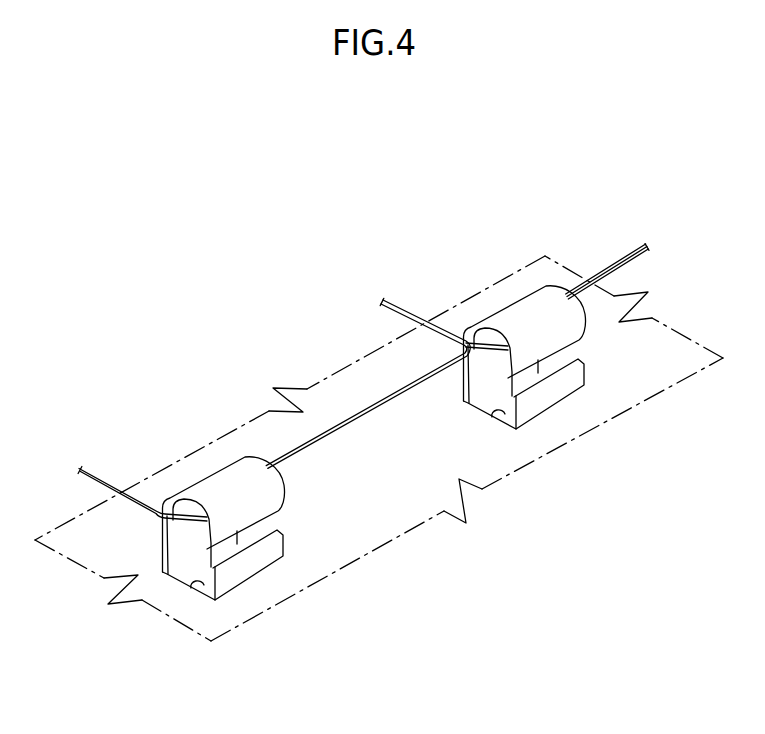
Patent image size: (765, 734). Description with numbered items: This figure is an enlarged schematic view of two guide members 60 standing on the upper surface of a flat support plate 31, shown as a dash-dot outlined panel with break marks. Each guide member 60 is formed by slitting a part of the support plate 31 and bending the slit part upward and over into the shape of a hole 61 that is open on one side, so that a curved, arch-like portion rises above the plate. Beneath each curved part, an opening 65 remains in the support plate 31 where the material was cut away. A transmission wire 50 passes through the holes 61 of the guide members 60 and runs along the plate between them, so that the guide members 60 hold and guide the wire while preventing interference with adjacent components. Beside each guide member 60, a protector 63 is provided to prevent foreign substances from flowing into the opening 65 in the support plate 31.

The support plate 31 is at (380, 520).
The transmission wires 50 is at (277, 456).
The guide members 60 is at (202, 467).
The holes 61 is at (206, 549).
The protectors 63 is at (277, 547).
The openings 65 is at (207, 578).